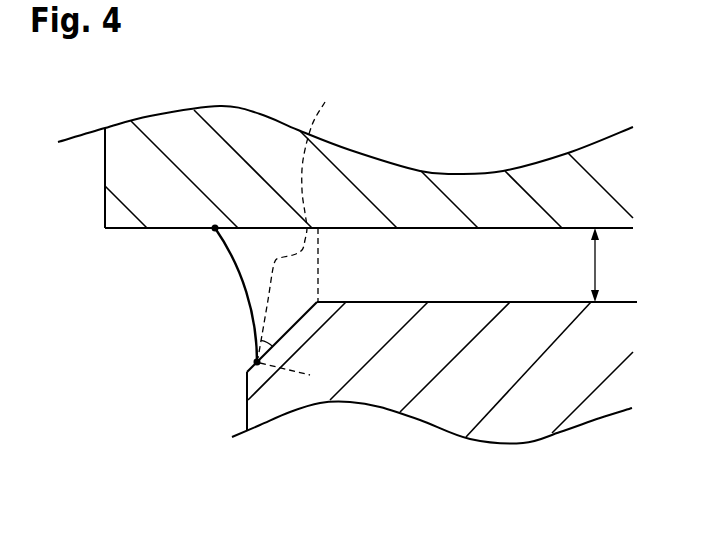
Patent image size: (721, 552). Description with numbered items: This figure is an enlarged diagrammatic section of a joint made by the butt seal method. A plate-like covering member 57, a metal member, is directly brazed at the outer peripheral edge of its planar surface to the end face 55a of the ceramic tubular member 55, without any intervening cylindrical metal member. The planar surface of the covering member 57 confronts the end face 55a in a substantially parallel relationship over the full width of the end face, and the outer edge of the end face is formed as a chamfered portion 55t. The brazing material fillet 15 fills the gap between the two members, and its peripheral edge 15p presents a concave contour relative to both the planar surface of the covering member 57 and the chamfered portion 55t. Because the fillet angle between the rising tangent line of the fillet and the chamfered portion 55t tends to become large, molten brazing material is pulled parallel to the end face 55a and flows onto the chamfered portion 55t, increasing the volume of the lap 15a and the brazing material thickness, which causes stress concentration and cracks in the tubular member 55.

The covering member 57 is at (106, 178).
The tubular member 55 is at (245, 382).
The end face 55a is at (428, 302).
The chamfered portion 55t is at (257, 362).
The brazing material fillet 15 is at (502, 293).
The lap 15a is at (288, 313).
The peripheral edge of the brazing material fillet 15p is at (233, 257).